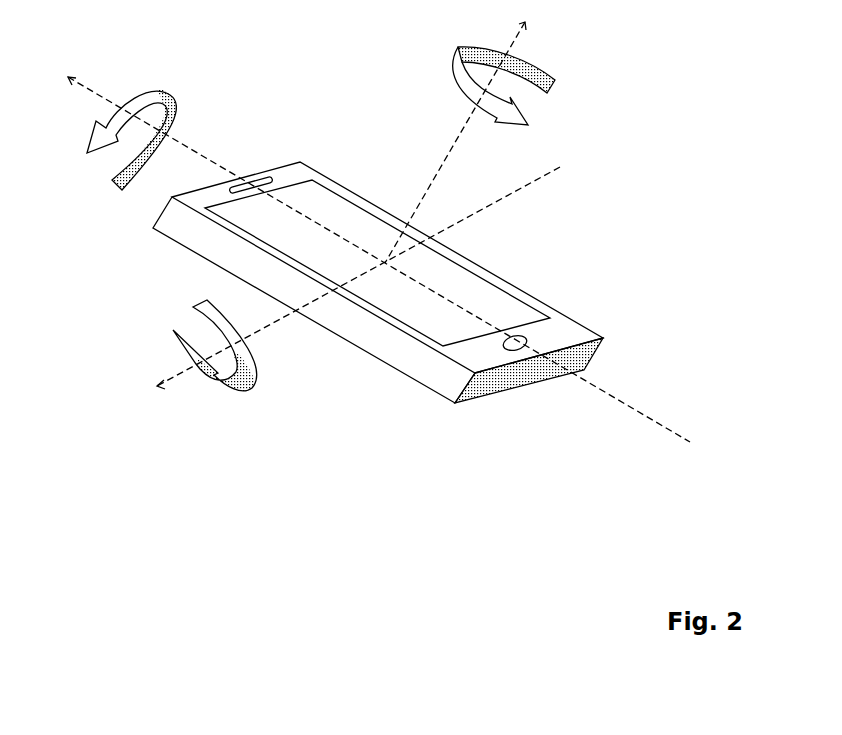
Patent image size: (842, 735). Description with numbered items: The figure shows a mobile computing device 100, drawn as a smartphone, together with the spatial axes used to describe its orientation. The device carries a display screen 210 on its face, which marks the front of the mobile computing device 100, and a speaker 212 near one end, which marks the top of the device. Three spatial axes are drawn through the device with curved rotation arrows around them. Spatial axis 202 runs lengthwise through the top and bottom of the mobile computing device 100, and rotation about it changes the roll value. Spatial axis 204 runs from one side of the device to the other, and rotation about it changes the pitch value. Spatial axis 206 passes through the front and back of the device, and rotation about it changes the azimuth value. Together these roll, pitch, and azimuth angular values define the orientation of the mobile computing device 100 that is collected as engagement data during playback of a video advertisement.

The mobile computing device 100 is at (220, 268).
The spatial axis 202 is at (165, 90).
The spatial axis 204 is at (232, 393).
The spatial axis 206 is at (483, 45).
The display screen 210 is at (477, 293).
The speaker 212 is at (268, 181).